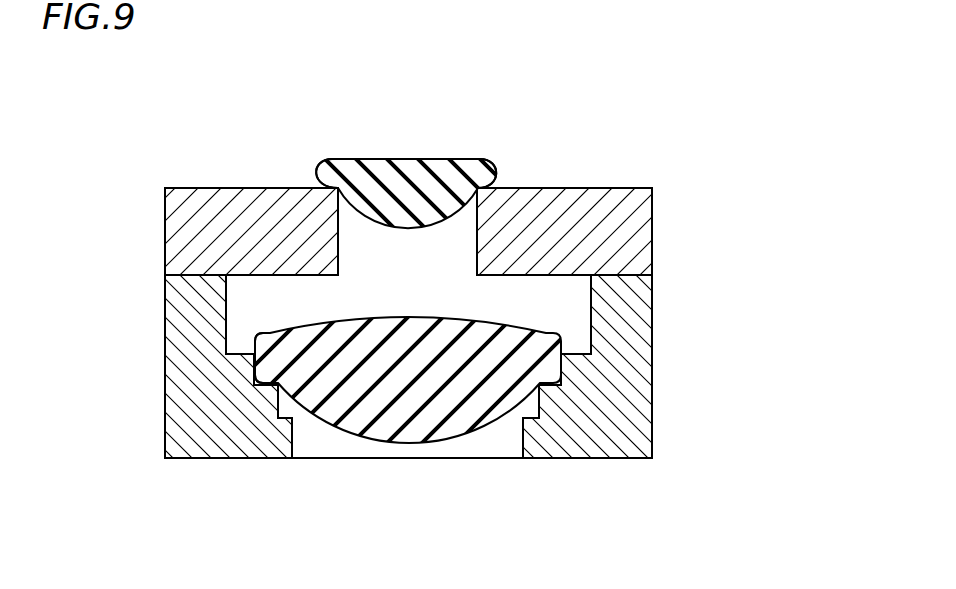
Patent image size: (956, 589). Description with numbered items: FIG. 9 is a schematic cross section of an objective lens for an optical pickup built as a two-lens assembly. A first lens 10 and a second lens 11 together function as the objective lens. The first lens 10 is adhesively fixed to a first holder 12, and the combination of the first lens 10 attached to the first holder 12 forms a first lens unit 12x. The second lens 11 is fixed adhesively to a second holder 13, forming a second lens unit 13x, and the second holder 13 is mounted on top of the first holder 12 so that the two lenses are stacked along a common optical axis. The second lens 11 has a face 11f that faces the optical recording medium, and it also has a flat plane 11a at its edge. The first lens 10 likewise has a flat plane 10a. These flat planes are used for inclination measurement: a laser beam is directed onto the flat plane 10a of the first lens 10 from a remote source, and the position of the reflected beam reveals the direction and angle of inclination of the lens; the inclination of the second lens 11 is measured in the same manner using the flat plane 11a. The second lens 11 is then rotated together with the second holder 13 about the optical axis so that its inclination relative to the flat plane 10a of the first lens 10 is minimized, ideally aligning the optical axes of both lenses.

The first lens 10 is at (462, 423).
The flat plane of first lens 10a is at (272, 333).
The second lens 11 is at (445, 168).
The flat plane of second lens 11a is at (320, 187).
The face of second lens 11f is at (378, 158).
The first holder 12 is at (605, 423).
The first lens unit 12x is at (698, 393).
The second holder 13 is at (195, 227).
The second lens unit 13x is at (634, 142).